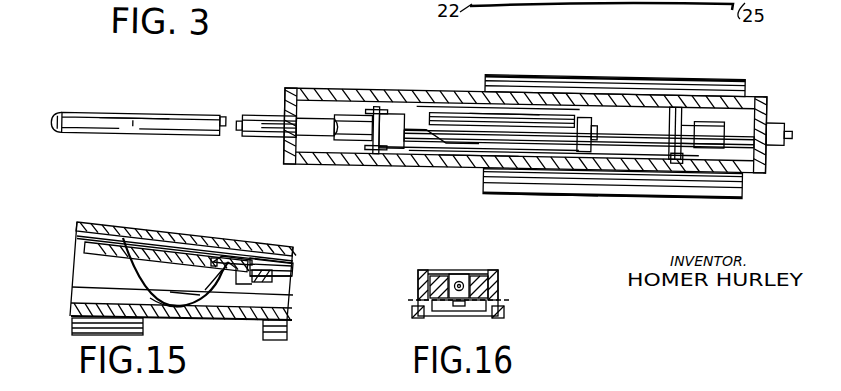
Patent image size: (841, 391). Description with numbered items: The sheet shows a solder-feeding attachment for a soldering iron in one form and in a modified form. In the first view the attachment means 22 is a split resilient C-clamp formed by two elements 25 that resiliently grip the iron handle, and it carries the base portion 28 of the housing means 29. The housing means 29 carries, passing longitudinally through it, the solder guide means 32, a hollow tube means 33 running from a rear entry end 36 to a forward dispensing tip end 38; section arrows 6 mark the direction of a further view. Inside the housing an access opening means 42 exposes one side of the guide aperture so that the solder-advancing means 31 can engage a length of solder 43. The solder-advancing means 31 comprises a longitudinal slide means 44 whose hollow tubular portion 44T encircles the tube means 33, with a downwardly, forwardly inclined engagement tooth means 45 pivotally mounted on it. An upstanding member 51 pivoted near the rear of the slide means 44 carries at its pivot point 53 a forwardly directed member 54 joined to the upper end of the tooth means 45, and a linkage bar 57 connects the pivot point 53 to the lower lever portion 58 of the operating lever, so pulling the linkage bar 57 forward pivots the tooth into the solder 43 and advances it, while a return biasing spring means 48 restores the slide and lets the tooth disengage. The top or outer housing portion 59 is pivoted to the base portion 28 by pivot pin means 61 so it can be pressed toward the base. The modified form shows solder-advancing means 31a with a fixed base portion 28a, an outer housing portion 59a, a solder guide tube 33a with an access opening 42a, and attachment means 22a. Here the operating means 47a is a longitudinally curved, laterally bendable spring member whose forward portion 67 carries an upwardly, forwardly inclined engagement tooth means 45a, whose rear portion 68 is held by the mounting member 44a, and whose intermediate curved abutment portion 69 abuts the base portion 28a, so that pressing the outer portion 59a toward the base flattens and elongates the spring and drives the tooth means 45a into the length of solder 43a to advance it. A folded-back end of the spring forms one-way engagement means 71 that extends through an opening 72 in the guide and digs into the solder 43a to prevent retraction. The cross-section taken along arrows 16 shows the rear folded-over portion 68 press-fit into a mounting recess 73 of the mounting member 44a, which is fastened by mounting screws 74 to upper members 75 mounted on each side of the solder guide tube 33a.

In FIG. 3, the section line 6- 6 is at (259, 124).
In FIG. 3, the attachment means 22 is at (548, 191).
In FIG. 3, the clamp elements 25 is at (723, 80).
In FIG. 3, the base portion 28 is at (471, 156).
In FIG. 3, the housing means 29 is at (410, 86).
In FIG. 3, the solder-advancing means 31 is at (445, 110).
In FIG. 3, the solder guide means 32 is at (127, 110).
In FIG. 3, the longitudinal hollow tube means 33 is at (133, 132).
In FIG. 3, the rear entry end 36 is at (777, 135).
In FIG. 3, the forward dispensing tip end 38 is at (56, 133).
In FIG. 3, the access opening means 42 is at (344, 125).
In FIG. 3, the length of solder 43 is at (242, 128).
In FIG. 3, the longitudinal slide means 44 is at (606, 127).
In FIG. 3, the hollow tubular portion 44T is at (506, 113).
In FIG. 3, the engagement tooth means 45 is at (414, 126).
In FIG. 3, the return biasing spring means 48 is at (351, 138).
In FIG. 3, the upstanding member 51 is at (591, 124).
In FIG. 3, the pivot point 53 is at (588, 116).
In FIG. 3, the forwardly directed member 54 is at (461, 140).
In FIG. 3, the linkage bar 57 is at (491, 146).
In FIG. 3, the lower lever portion 58 is at (371, 146).
In FIG. 3, the top or outer housing portion 59 is at (289, 142).
In FIG. 3, the pivot pin means 61 is at (684, 150).
In FIG. 15, the section arrows 16 is at (257, 237).
In FIG. 15, the attachment means 22a is at (68, 340).
In FIG. 15, the fixed base portion 28a is at (178, 293).
In FIG. 16, the fixed base portion 28a is at (503, 317).
In FIG. 15, the solder-advancing means 31a is at (238, 252).
In FIG. 15, the solder guide tube 33a is at (297, 259).
In FIG. 16, the solder guide tube 33a is at (480, 278).
In FIG. 15, the access opening means 42a is at (75, 238).
In FIG. 15, the length of solder 43a is at (165, 238).
In FIG. 16, the length of solder 43a is at (459, 280).
In FIG. 15, the mounting member 44a is at (272, 279).
In FIG. 16, the mounting member 44a is at (425, 317).
In FIG. 15, the engagement tooth means 45a is at (183, 275).
In FIG. 15, the operating means 47a is at (128, 288).
In FIG. 15, the upper or outer housing portion 59a is at (85, 220).
In FIG. 16, the upper or outer housing portion 59a is at (425, 270).
In FIG. 15, the forward portion 67 is at (122, 253).
In FIG. 15, the rear portion 68 is at (252, 287).
In FIG. 15, the intermediate curved abutment portion 69 is at (182, 313).
In FIG. 15, the one-way engagement means 71 is at (252, 272).
In FIG. 15, the opening 72 is at (217, 264).
In FIG. 16, the mounting recess 73 is at (458, 311).
In FIG. 16, the mounting screws 74 is at (462, 300).
In FIG. 16, the upper members 75 is at (436, 277).